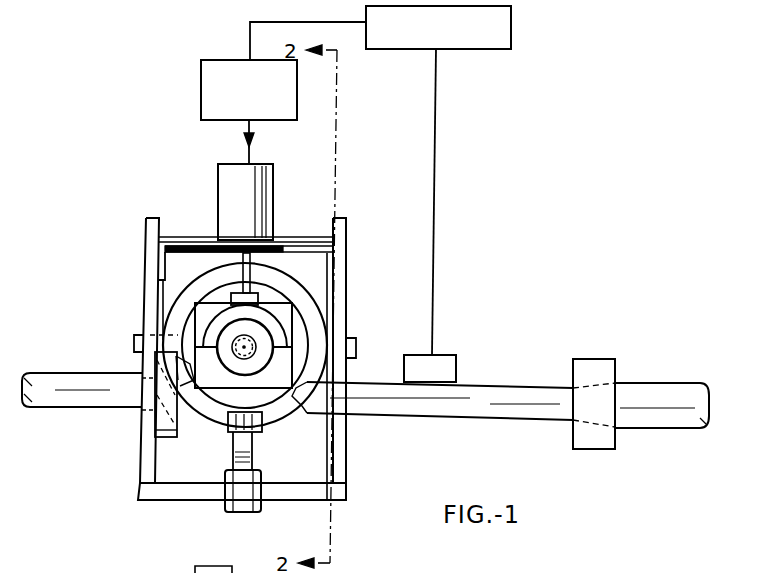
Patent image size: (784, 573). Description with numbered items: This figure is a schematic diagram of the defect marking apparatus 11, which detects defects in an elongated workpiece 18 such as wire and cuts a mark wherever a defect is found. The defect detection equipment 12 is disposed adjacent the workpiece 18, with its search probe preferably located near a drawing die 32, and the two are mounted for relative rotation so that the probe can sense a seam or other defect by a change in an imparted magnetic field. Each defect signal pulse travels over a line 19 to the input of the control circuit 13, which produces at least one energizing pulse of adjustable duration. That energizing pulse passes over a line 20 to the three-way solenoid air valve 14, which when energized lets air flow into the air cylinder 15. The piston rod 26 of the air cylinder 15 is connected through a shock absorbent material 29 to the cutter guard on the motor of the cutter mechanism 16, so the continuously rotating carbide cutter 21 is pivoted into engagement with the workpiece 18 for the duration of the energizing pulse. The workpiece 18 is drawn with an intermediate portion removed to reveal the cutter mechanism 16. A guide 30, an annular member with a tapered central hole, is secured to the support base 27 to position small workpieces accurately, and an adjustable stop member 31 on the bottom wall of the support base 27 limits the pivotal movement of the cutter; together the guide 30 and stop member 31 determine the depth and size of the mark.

The defect marking apparatus 11 is at (500, 238).
The defect detection equipment 12 is at (456, 360).
The control circuit 13 is at (511, 33).
The three-way solenoid air valve 14 is at (201, 79).
The air cylinder 15 is at (218, 200).
The cutter mechanism 16 is at (346, 290).
The elongated workpiece 18 is at (105, 376).
The line 19 is at (436, 176).
The line 20 is at (293, 22).
The carbide cutter 21 is at (249, 350).
The piston rod 26 is at (250, 268).
The support base 27 is at (183, 492).
The shock absorbent material 29 is at (258, 298).
The guide 30 is at (167, 440).
The adjustable stop member 31 is at (252, 450).
The drawing die 32 is at (596, 359).